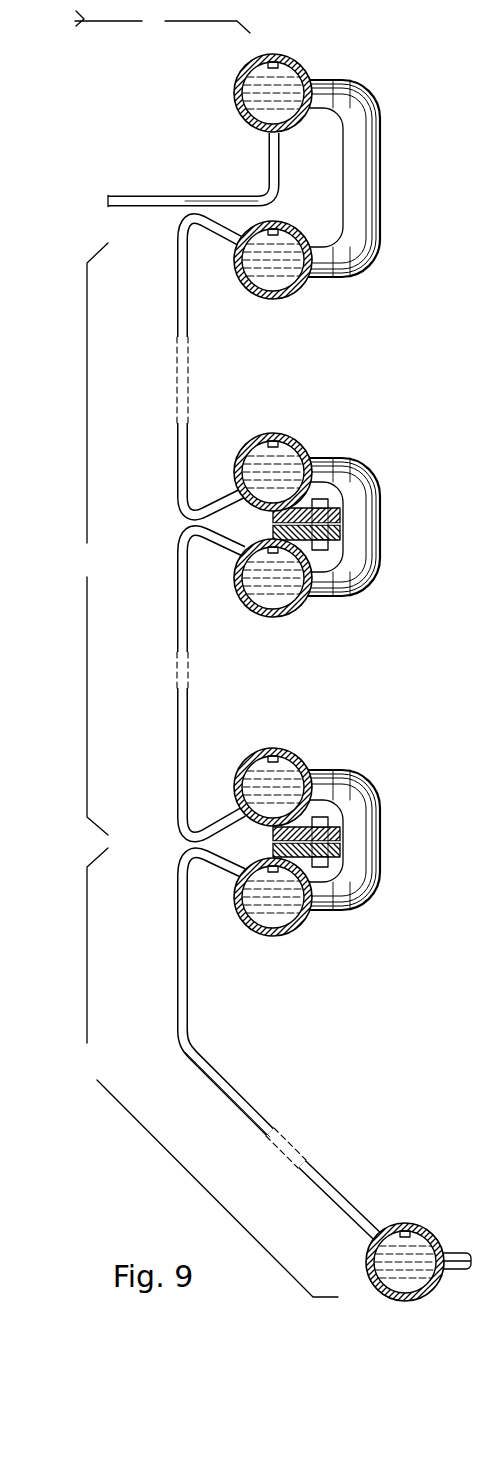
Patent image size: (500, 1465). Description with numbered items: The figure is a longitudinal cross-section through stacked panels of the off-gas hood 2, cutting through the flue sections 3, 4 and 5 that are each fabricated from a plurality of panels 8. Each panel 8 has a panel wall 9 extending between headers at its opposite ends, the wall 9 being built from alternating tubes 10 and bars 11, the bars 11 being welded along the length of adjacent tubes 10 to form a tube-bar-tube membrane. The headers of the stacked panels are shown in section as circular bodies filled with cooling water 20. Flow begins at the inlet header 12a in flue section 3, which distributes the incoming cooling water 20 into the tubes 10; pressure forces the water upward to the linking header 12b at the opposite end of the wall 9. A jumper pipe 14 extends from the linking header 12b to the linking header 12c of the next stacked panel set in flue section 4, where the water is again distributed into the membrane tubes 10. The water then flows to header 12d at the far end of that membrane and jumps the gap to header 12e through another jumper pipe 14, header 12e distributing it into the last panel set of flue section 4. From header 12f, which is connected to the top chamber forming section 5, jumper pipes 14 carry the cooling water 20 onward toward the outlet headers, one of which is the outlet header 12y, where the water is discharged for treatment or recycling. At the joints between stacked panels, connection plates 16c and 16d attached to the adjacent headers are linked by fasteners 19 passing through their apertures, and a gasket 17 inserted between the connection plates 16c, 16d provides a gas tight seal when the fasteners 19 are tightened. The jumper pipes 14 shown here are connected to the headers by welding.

The off-gas hood 2 is at (455, 1270).
The flue section 3 is at (209, 1072).
The flue section 4 is at (94, 539).
The flue section 5 is at (162, 22).
The panel 8 is at (499, 696).
The panel wall 9 is at (225, 172).
The tube 10 is at (157, 195).
The bar 11 is at (499, 425).
The inlet header 12a is at (433, 1234).
The linking header 12b is at (295, 923).
The linking header 12c is at (293, 763).
The header 12d is at (299, 606).
The header 12e is at (292, 444).
The header 12f is at (299, 287).
The outlet header 12y is at (299, 64).
The jumper pipe 14 is at (367, 170).
The connection plate 16c is at (345, 565).
The connection plate 16d is at (338, 512).
The gasket 17 is at (341, 523).
The fastener 19 is at (324, 560).
The cooling water 20 is at (258, 96).